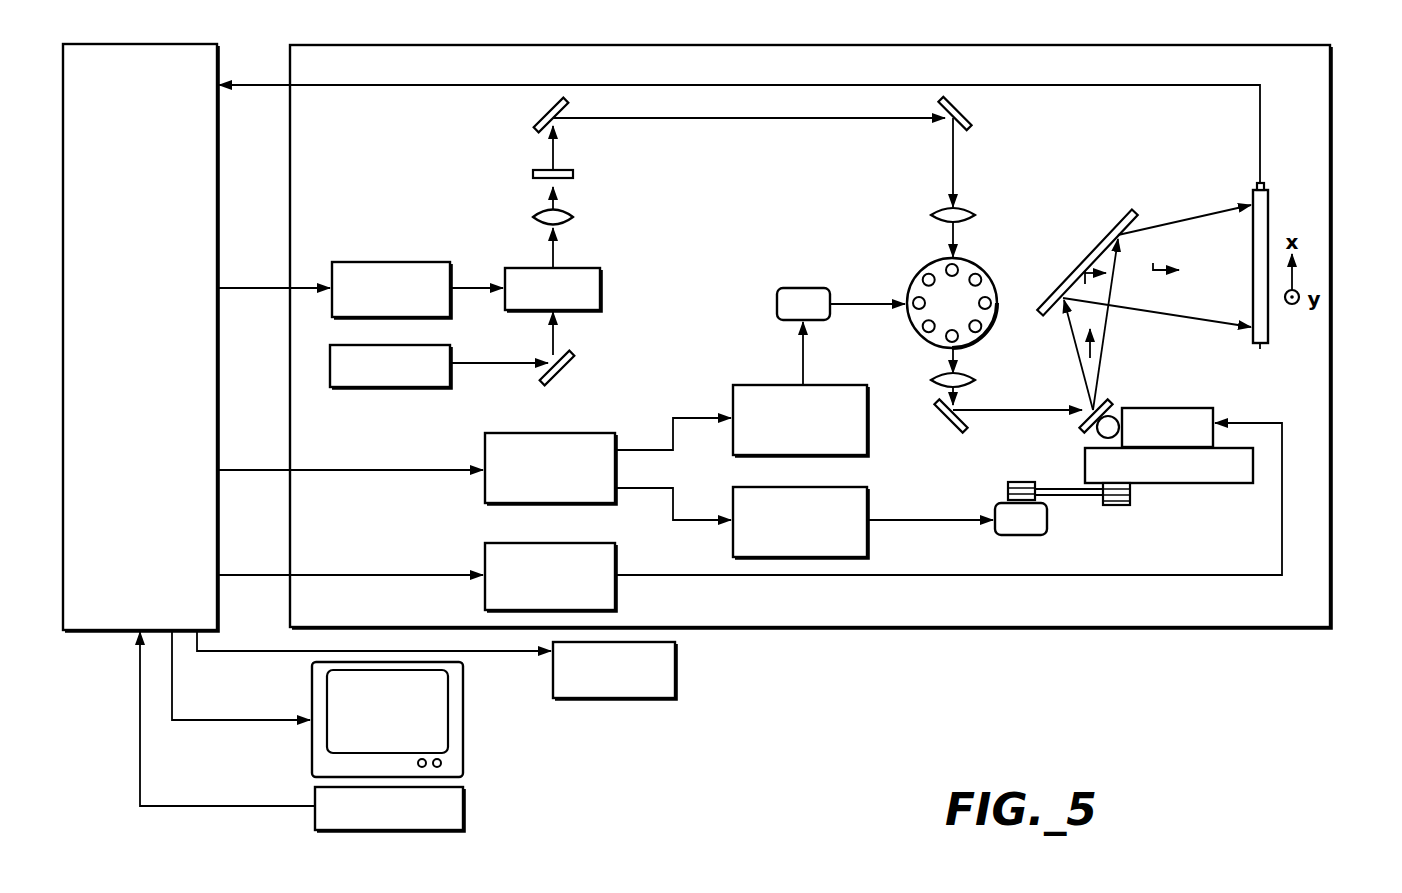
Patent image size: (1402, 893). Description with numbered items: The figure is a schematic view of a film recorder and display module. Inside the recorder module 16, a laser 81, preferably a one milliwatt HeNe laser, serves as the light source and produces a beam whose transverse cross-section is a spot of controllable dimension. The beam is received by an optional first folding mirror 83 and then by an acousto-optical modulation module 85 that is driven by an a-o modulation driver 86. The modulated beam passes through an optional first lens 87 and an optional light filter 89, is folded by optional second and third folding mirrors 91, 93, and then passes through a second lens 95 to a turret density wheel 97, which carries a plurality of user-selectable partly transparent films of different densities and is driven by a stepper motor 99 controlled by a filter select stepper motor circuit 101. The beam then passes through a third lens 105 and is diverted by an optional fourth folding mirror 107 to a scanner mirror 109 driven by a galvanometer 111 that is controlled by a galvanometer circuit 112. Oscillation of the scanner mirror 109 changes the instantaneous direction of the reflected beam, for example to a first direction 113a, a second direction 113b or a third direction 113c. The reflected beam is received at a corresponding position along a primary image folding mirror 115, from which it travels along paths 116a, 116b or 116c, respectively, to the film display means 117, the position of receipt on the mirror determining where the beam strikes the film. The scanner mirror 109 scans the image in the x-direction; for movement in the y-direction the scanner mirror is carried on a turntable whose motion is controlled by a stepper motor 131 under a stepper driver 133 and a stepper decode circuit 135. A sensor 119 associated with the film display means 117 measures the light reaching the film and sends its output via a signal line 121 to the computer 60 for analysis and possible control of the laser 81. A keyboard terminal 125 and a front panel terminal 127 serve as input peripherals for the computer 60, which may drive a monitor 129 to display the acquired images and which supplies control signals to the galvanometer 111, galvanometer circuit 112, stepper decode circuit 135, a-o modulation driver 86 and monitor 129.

The computer 60 is at (109, 631).
The recorder module 16 is at (845, 628).
The signal line 121 is at (1060, 84).
The laser 81 is at (388, 388).
The first folding mirror 83 is at (556, 376).
The acousto-optical modulation module 85 is at (577, 268).
The a-o modulation driver 86 is at (428, 262).
The first lens 87 is at (548, 225).
The light filter 89 is at (548, 179).
The second folding mirror 91 is at (548, 128).
The third folding mirror 93 is at (965, 130).
The second lens 95 is at (965, 222).
The turret density wheel 97 is at (995, 281).
The stepper motor 99 is at (793, 288).
The filter select stepper motor circuit 101 is at (845, 385).
The third lens 105 is at (966, 387).
The fourth folding mirror 107 is at (957, 433).
The scanner mirror 109 is at (1083, 429).
The galvanometer 111 is at (1190, 408).
The galvanometer circuit 112 is at (550, 543).
The first direction 113a is at (1073, 355).
The second direction 113b is at (1094, 357).
The third direction 113c is at (1108, 344).
The primary image folding mirror 115 is at (1115, 228).
The path 116a is at (1150, 312).
The path 116b is at (1153, 265).
The path 116c is at (1150, 228).
The film display means 117 is at (1260, 348).
The sensor 119 is at (1258, 183).
The keyboard terminal 125 is at (463, 813).
The front panel terminal 127 is at (640, 698).
The monitor 129 is at (463, 741).
The stepper motor 131 is at (1020, 535).
The stepper driver 133 is at (845, 487).
The stepper decode circuit 135 is at (550, 433).